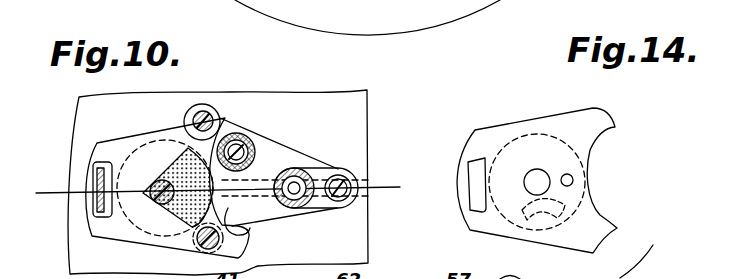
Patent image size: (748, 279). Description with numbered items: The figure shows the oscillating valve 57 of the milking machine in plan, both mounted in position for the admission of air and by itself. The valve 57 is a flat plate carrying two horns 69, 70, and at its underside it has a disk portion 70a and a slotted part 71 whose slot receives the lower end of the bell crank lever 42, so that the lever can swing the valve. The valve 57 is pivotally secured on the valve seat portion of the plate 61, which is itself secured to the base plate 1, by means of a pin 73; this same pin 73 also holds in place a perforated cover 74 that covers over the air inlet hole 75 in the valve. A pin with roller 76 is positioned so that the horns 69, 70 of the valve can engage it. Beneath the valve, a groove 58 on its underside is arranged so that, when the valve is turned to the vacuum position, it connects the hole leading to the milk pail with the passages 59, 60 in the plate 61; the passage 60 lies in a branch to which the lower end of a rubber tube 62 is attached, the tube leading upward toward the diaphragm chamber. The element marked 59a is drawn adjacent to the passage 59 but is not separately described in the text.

In FIG. 10, the base plate 1 is at (218, 182).
In FIG. 14, the horn 70 is at (605, 126).
In FIG. 10, the disk portion 70a is at (135, 150).
In FIG. 14, the disk portion 70a is at (502, 214).
In FIG. 10, the slotted part 71 is at (94, 168).
In FIG. 14, the slotted part 71 is at (478, 162).
In FIG. 10, the bell crank lever 42 is at (96, 183).
In FIG. 10, the pin 73 is at (185, 207).
In FIG. 10, the oscillating valve 57 is at (146, 140).
In FIG. 14, the oscillating valve 57 is at (554, 124).
In FIG. 10, the perforated cover 74 is at (215, 118).
In FIG. 10, the pin with roller 76 is at (258, 148).
In FIG. 10, the air inlet hole 75 is at (262, 150).
In FIG. 14, the air inlet hole 75 is at (573, 180).
In FIG. 10, the rubber tube 62 is at (298, 169).
In FIG. 10, the plate 61 is at (344, 180).
In FIG. 10, the passage 60 is at (338, 208).
In FIG. 10, the passage 59 is at (265, 237).
In FIG. 10, the hook 59a is at (261, 231).
In FIG. 14, the groove 58 is at (530, 220).
In FIG. 14, the horn 69 is at (617, 232).